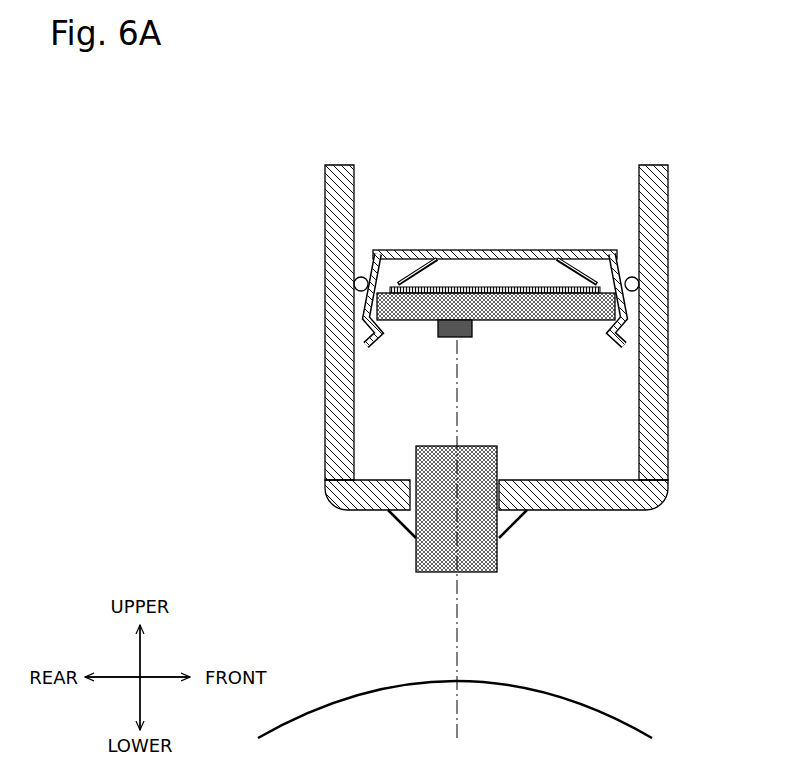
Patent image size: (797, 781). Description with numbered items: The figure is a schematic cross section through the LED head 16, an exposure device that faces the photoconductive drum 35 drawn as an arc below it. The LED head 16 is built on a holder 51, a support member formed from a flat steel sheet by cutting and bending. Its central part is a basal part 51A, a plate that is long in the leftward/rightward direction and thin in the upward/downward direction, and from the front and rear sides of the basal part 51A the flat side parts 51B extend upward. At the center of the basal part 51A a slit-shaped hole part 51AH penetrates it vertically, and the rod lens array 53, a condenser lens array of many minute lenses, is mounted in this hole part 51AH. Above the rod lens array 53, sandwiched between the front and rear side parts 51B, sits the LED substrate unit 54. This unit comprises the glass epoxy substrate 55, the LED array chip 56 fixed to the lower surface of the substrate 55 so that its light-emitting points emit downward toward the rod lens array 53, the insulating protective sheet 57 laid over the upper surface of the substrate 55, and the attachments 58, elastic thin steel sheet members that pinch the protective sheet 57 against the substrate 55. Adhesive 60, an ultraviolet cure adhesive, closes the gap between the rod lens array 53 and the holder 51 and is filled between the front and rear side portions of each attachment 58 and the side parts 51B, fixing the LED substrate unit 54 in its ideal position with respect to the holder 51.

The LED head 16 is at (221, 143).
The photoconductive drum 35 is at (610, 735).
The holder 51 is at (668, 472).
The basal part 51A is at (625, 510).
The side parts 51B is at (324, 170).
The hole part 51AH is at (406, 466).
The rod lens array 53 is at (478, 574).
The LED substrate unit 54 is at (431, 179).
The substrate 55 is at (408, 320).
The LED array chip 56 is at (475, 336).
The protective sheet 57 is at (503, 292).
The attachments 58 is at (470, 250).
The adhesive 60 is at (354, 283).